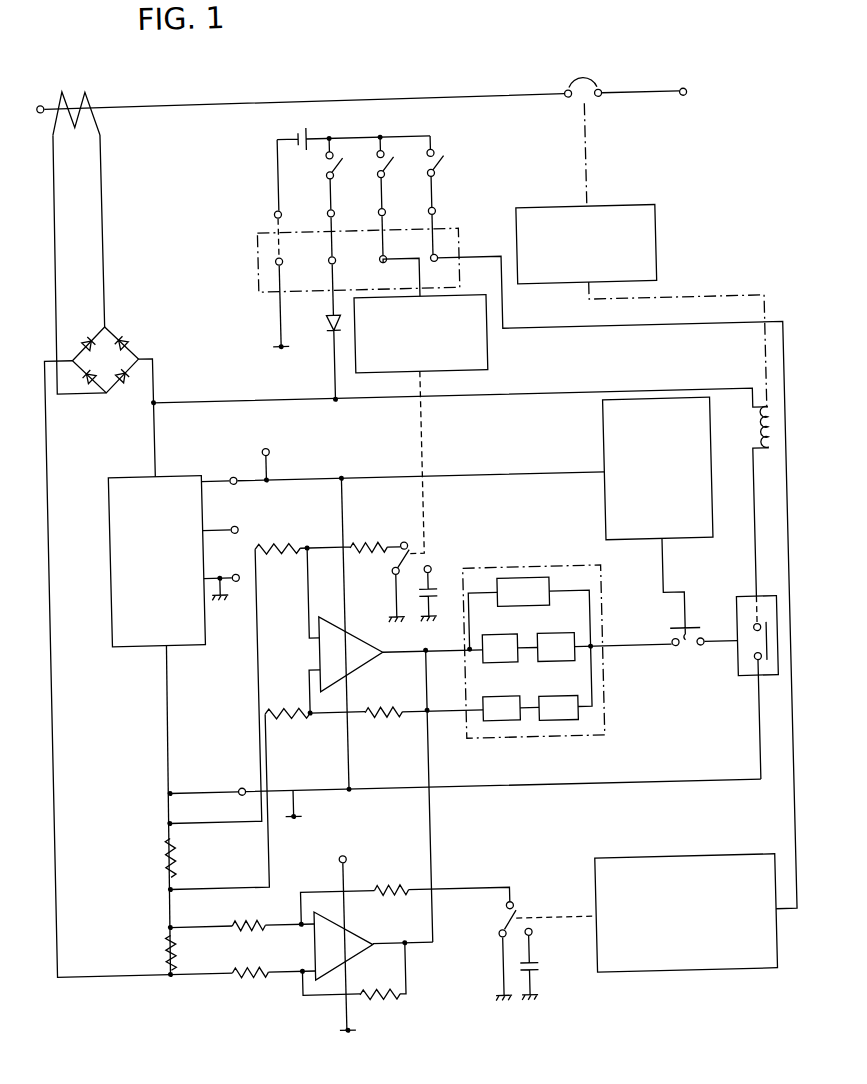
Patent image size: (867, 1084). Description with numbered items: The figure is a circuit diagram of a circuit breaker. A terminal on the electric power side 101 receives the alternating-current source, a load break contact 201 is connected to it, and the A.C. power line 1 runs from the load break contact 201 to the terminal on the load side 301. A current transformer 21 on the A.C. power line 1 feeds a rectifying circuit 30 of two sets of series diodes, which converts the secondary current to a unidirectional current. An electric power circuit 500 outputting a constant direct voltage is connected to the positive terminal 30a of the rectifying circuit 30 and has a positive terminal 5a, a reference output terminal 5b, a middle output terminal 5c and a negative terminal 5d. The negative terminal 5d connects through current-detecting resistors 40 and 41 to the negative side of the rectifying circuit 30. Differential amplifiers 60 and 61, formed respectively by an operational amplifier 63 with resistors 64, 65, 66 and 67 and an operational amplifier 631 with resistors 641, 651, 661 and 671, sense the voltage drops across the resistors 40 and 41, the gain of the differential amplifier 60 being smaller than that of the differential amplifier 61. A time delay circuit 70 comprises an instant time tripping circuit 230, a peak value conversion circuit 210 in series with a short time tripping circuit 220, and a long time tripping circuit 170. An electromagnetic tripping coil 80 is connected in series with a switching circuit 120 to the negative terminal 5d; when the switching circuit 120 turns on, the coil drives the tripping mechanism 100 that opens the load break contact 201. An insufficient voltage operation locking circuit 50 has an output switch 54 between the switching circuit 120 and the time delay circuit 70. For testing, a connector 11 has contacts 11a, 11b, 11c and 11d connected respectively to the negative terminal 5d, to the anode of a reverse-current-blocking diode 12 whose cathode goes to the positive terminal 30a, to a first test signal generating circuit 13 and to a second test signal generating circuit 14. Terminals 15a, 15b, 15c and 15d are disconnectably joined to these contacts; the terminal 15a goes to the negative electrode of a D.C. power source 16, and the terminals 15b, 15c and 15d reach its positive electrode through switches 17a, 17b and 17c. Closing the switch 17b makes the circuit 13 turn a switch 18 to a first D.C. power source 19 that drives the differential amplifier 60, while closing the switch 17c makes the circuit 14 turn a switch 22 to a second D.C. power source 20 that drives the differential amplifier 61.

The A.C. power line 1 is at (466, 97).
The terminal on load side 301 is at (52, 96).
The current transformer 21 is at (98, 86).
The load break contact 201 is at (596, 84).
The terminal on electric power side 101 is at (694, 95).
The D.C. power source 16 is at (298, 132).
The switch 17a is at (348, 162).
The switch 17b is at (399, 162).
The switch 17c is at (449, 162).
The terminal 15a is at (282, 212).
The terminal 15b is at (337, 212).
The terminal 15c is at (388, 213).
The terminal 15d is at (438, 213).
The connector for testing operation 11 is at (466, 230).
The contact 11a is at (284, 260).
The contact 11b is at (338, 262).
The contact 11c is at (390, 262).
The contact 11d is at (438, 258).
The diode 12 is at (332, 322).
The first test signal generating circuit 13 is at (492, 362).
The tripping mechanism 100 is at (663, 232).
The rectifying circuit 30 is at (136, 340).
The positive terminal of the rectifying circuit 30a is at (160, 396).
The electromagnetic tripping coil 80 is at (771, 456).
The negative output terminal 5d is at (280, 344).
The electric power circuit 500 is at (109, 545).
The positive terminal 5a is at (272, 448).
The reference output terminal 5b is at (238, 525).
The middle output terminal 5c is at (234, 572).
The resistor 64 is at (277, 552).
The resistor 66 is at (371, 541).
The switch 18 is at (398, 562).
The first D.C. power source 19 is at (436, 590).
The differential amplifier 60 is at (312, 662).
The operational amplifier 63 is at (378, 660).
The resistor 65 is at (297, 716).
The resistor 67 is at (378, 717).
The time delay circuit 70 is at (522, 569).
The instant time tripping circuit 230 is at (515, 608).
The peak value conversion circuit 210 is at (498, 666).
The short time tripping circuit 220 is at (552, 666).
The long time tripping circuit 170 is at (548, 724).
The insufficient voltage operation locking circuit 50 is at (713, 480).
The output switch 54 is at (682, 652).
The switching circuit 120 is at (735, 680).
The resistor for current detection 40 is at (168, 852).
The resistor for current detection 41 is at (160, 947).
The resistor 641 is at (238, 916).
The resistor 651 is at (244, 973).
The resistor 661 is at (388, 866).
The resistor 671 is at (375, 998).
The differential amplifier 61 is at (305, 955).
The operational amplifier 631 is at (365, 943).
The switch 22 is at (497, 928).
The second D.C. power source 20 is at (529, 975).
The second test signal generating circuit 14 is at (700, 862).